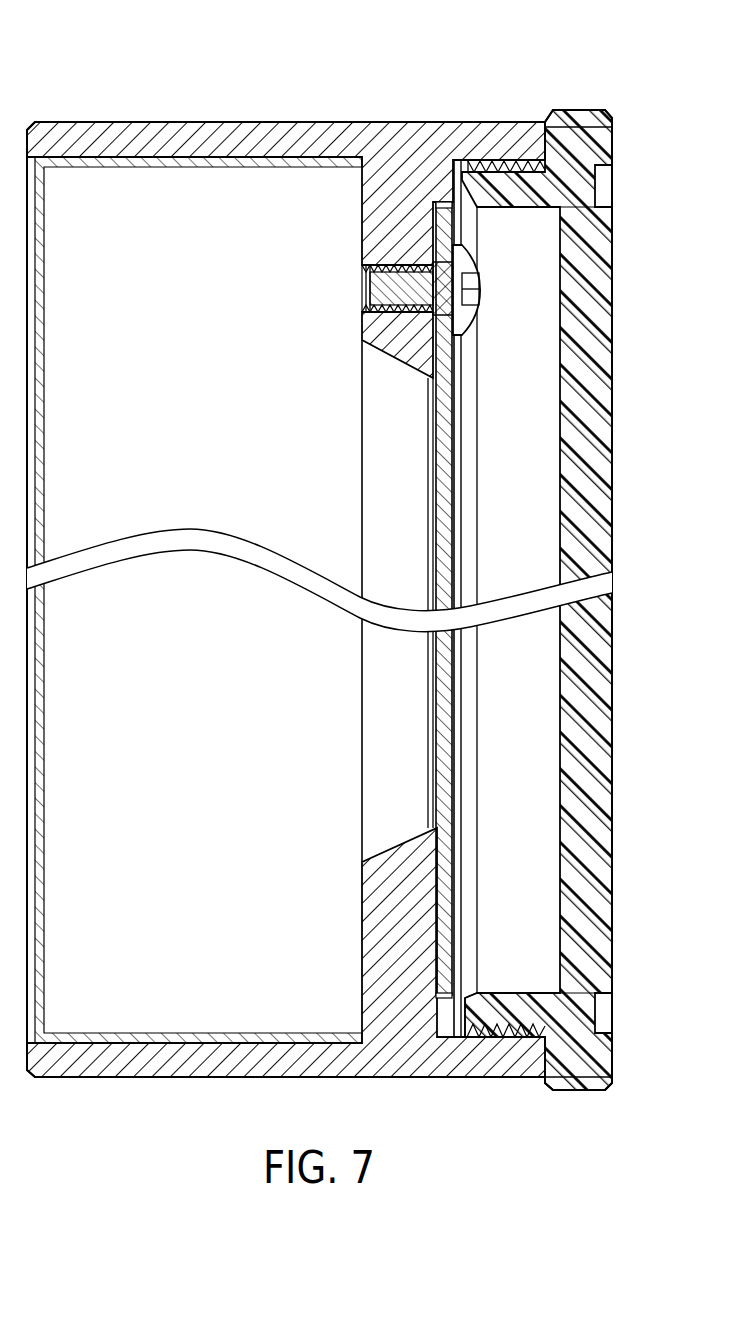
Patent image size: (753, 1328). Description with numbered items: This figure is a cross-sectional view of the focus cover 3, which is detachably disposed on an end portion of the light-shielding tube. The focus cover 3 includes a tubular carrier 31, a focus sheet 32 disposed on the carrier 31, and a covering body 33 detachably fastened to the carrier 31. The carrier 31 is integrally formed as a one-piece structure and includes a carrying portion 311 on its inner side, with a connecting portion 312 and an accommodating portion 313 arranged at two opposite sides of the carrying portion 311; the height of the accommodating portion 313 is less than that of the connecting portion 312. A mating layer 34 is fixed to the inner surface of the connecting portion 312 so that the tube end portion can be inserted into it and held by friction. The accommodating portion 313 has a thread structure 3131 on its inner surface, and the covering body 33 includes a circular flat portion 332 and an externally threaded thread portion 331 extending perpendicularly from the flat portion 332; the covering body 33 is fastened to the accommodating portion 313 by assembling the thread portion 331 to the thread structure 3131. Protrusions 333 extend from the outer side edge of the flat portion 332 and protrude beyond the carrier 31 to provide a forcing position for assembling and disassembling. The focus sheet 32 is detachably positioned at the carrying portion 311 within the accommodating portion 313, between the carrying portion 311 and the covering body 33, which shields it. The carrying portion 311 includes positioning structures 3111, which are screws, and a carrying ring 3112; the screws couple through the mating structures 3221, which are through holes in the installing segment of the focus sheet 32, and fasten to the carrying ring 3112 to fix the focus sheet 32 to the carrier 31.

The focus cover 3 is at (51, 32).
The carrier 31 is at (330, 122).
The carrying portion 311 is at (245, 235).
The positioning structures 3111 is at (385, 292).
The carrying ring 3112 is at (388, 252).
The connecting portion 312 is at (152, 140).
The accommodating portion 313 is at (497, 140).
The thread structure 3131 is at (500, 174).
The focus sheet 32 is at (452, 548).
The mating structures 3221 is at (440, 318).
The covering body 33 is at (612, 408).
The thread portion 331 is at (607, 864).
The flat portion 332 is at (520, 1026).
The protrusions 333 is at (586, 1092).
The mating layer 34 is at (190, 165).